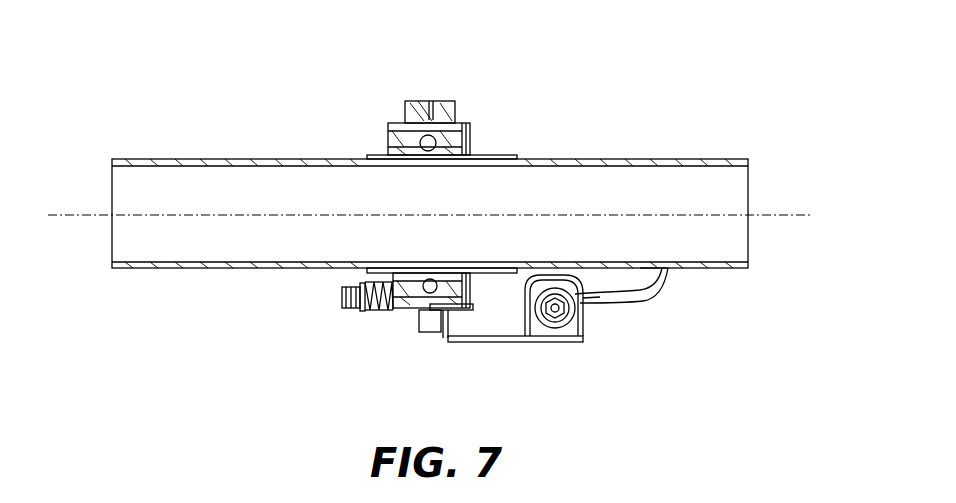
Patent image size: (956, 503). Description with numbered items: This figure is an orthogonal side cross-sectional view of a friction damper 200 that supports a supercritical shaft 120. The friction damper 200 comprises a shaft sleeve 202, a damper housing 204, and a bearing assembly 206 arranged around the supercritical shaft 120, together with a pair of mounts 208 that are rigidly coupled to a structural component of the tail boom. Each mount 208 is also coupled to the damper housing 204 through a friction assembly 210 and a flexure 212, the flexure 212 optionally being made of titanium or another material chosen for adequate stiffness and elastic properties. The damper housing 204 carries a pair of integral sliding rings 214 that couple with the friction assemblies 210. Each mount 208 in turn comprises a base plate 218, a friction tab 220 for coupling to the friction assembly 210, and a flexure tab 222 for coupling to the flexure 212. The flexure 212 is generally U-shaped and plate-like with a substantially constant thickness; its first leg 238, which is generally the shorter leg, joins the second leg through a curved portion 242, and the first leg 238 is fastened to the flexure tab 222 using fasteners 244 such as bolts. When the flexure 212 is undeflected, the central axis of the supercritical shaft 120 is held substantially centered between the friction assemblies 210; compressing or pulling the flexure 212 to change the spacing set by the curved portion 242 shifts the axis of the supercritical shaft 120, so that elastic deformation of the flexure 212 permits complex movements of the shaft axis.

The supercritical shaft 120 is at (656, 161).
The friction damper 200 is at (510, 98).
The shaft sleeve 202 is at (492, 156).
The damper housing 204 is at (408, 101).
The bearing assembly 206 is at (416, 142).
The mount 208 is at (481, 340).
The friction assembly 210 is at (397, 317).
The flexure 212 is at (641, 304).
The integral sliding ring 214 is at (432, 334).
The base plate 218 is at (489, 343).
The friction tab 220 is at (447, 340).
The flexure tab 222 is at (560, 312).
The first leg 238 is at (616, 310).
The curved portion 242 is at (668, 272).
The fastener 244 is at (578, 326).